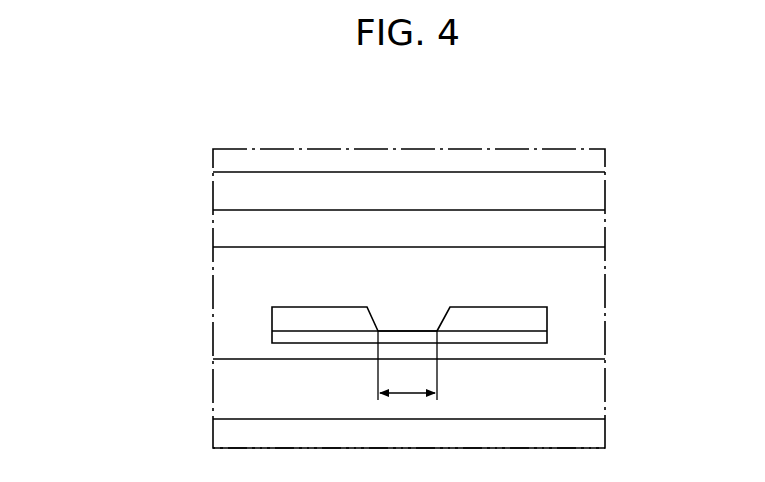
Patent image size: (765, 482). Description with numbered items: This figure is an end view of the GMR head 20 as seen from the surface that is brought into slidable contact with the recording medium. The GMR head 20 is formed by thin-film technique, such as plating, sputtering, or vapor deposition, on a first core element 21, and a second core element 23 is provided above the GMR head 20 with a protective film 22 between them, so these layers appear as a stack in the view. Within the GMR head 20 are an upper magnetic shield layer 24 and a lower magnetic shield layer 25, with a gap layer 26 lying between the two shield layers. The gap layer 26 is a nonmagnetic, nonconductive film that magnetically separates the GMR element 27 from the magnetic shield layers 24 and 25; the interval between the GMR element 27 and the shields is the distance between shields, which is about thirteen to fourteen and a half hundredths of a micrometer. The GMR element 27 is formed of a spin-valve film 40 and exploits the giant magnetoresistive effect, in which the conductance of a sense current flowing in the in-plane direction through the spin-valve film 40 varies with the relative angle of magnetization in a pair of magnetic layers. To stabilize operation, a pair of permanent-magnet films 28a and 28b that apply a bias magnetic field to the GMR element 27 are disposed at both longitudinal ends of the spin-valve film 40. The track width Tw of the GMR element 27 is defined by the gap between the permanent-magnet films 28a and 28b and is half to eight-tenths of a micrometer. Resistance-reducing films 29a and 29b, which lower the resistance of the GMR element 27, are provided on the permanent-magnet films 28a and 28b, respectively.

The GMR head 20 is at (450, 128).
The first core element 21 is at (588, 440).
The protective film 22 is at (600, 188).
The second core element 23 is at (600, 161).
The upper magnetic shield layer 24 is at (588, 384).
The lower magnetic shield layer 25 is at (598, 229).
The gap layer 26 is at (594, 276).
The GMR element 27 is at (425, 319).
The permanent-magnet film 28a is at (272, 318).
The permanent-magnet film 28b is at (547, 318).
The resistance-reducing film 29a is at (272, 341).
The resistance-reducing film 29b is at (547, 341).
The spin-valve film 40 is at (398, 329).
The track width Tw is at (407, 365).